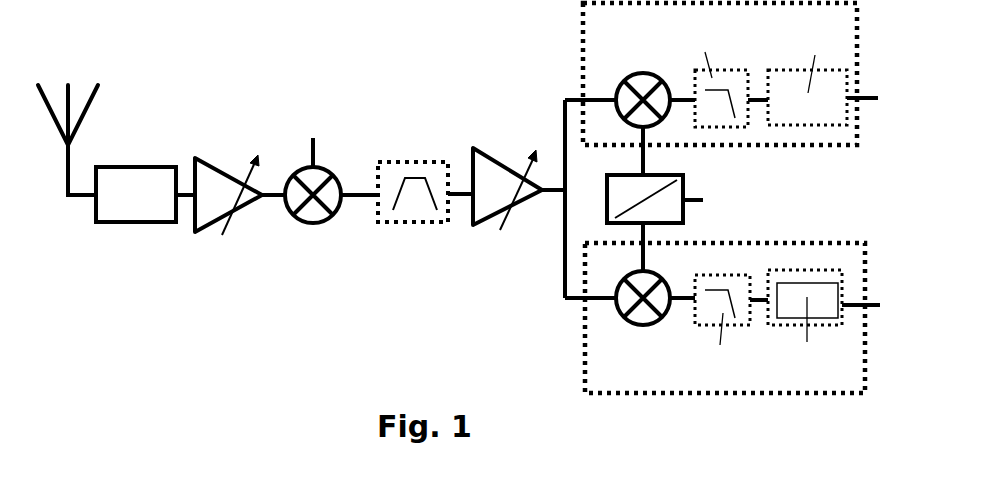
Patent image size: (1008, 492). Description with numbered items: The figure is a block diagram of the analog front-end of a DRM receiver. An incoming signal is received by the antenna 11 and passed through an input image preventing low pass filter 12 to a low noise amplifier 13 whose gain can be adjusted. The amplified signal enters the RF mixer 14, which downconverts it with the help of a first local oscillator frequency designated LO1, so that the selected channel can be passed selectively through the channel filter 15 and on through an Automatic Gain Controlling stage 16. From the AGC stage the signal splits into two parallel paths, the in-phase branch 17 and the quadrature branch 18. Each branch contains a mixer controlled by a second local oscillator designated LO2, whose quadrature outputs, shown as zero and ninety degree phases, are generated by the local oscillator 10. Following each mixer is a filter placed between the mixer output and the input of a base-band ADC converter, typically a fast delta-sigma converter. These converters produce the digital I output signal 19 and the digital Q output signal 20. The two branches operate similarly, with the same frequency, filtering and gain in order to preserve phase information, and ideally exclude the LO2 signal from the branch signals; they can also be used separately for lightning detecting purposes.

The local oscillator 10 is at (746, 206).
The antenna 11 is at (70, 70).
The input image preventing low pass filter 12 is at (133, 167).
The low noise amplifier 13 is at (226, 160).
The RF mixer 14 is at (312, 110).
The channel filter 15 is at (417, 160).
The Automatic Gain Controlling stage 16 is at (487, 150).
The in-phase branch 17 is at (607, 50).
The quadrature branch 18 is at (610, 334).
The digital I output signal 19 is at (868, 105).
The digital Q output signal 20 is at (880, 284).